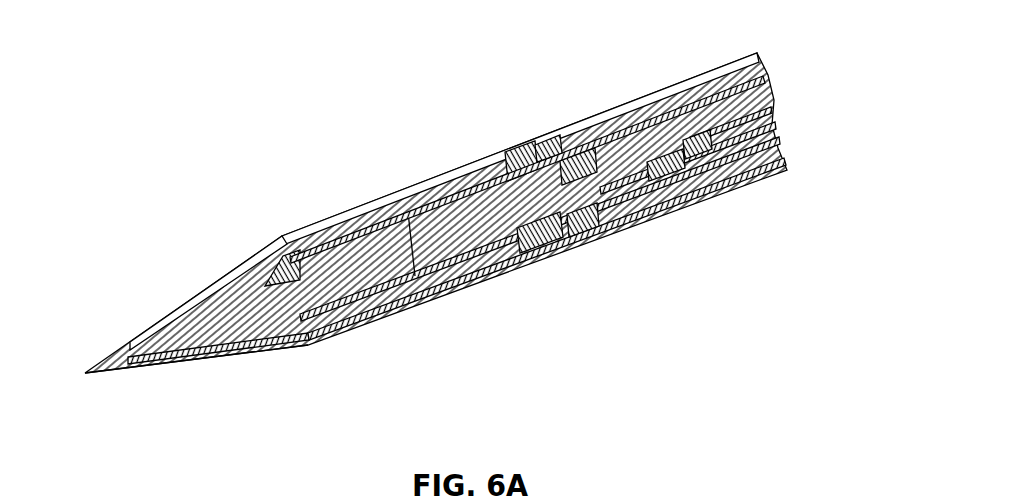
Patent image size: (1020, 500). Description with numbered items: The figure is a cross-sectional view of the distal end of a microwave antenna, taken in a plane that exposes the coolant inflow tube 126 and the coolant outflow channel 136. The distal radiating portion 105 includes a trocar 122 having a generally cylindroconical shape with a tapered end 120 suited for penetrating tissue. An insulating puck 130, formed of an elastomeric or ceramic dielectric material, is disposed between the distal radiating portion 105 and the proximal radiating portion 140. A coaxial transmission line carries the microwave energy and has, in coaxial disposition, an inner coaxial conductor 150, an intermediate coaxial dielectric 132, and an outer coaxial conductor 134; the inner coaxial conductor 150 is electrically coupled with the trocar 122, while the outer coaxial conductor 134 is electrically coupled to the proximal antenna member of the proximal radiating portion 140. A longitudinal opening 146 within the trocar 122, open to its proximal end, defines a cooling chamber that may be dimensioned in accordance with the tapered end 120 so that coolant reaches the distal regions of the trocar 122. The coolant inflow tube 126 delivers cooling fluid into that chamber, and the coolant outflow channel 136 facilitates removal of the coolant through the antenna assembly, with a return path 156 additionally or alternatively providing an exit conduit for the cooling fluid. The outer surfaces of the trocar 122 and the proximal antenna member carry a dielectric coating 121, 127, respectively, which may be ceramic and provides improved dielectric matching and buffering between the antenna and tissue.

The distal radiating portion 105 is at (360, 352).
The tapered end 120 is at (133, 376).
The dielectric coating 121 is at (183, 326).
The trocar 122 is at (208, 334).
The coolant inflow tube 126 is at (574, 136).
The dielectric coating 127 is at (625, 123).
The insulating puck 130 is at (527, 150).
The intermediate coaxial dielectric 132 is at (742, 85).
The outer coaxial conductor 134 is at (775, 135).
The coolant outflow channel 136 is at (597, 203).
The proximal radiating portion 140 is at (680, 94).
The longitudinal opening 146 is at (362, 285).
The inner coaxial conductor 150 is at (732, 165).
The return path 156 is at (775, 150).